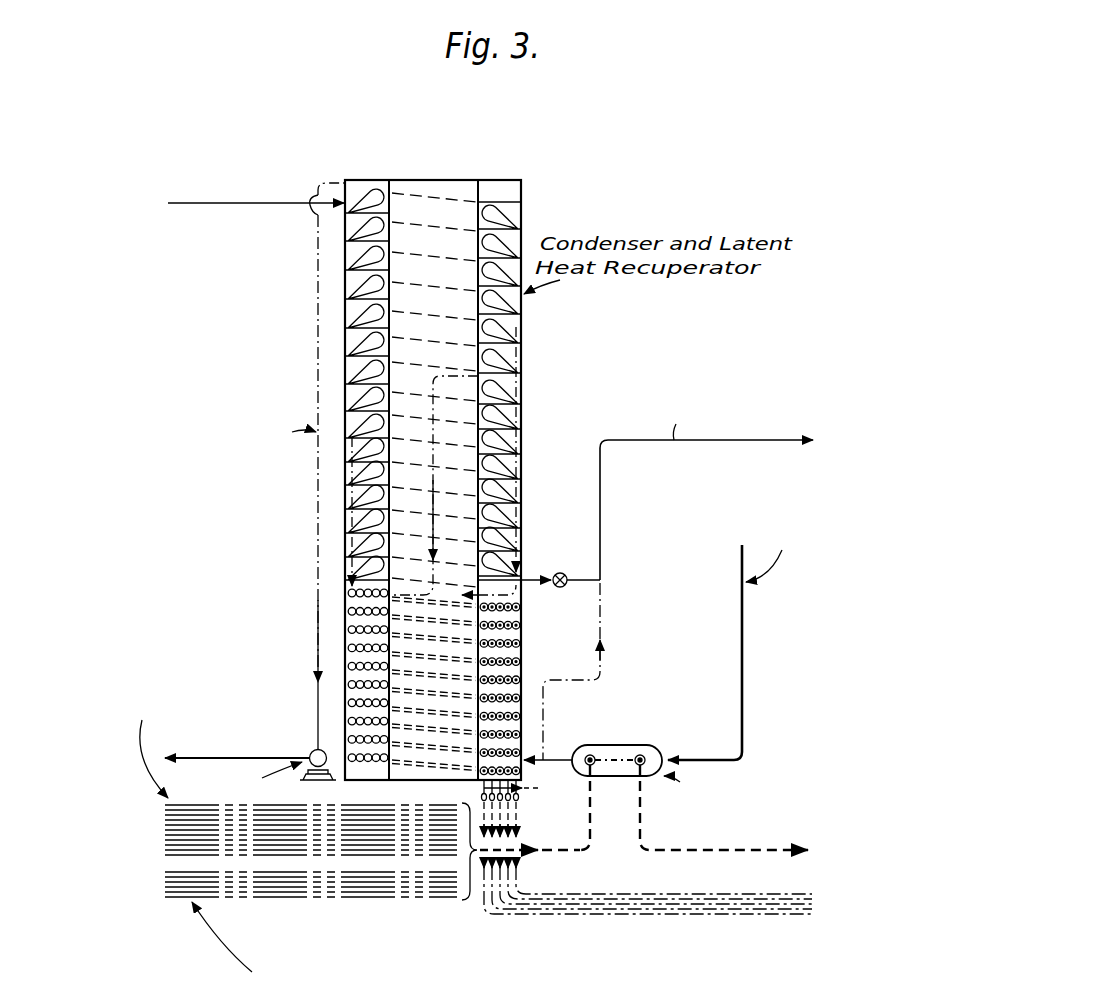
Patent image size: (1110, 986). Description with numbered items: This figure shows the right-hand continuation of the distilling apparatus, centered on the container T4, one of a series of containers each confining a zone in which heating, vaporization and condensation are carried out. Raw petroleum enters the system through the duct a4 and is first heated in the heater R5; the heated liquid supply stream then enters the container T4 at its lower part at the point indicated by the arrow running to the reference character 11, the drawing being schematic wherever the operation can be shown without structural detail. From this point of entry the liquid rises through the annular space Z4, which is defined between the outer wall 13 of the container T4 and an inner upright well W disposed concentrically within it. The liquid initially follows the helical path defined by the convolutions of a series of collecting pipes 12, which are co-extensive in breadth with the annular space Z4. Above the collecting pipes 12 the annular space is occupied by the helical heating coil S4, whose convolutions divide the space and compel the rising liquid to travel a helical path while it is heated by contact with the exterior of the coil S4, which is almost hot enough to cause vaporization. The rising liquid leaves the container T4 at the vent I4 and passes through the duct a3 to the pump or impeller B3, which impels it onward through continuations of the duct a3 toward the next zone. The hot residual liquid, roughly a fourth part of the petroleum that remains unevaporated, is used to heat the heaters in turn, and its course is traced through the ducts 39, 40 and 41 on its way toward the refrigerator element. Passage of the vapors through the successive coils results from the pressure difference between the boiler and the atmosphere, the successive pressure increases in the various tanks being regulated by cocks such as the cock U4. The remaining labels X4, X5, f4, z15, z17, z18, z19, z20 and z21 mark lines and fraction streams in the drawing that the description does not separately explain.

The container T4 is at (436, 180).
The inner upright well W is at (478, 190).
The heating coil S4 is at (368, 200).
The outer wall 13 is at (522, 418).
The annular space Z4 is at (378, 768).
The collecting pipes 12 is at (520, 642).
The first vapor fraction inlet X4 is at (262, 203).
The vent I4 is at (343, 180).
The duct a3 is at (316, 465).
The pump or impeller B3 is at (313, 781).
The cock U4 is at (558, 573).
The residue of first vapor fraction outlet X5 is at (782, 440).
The return pipe f4 is at (600, 608).
The duct a4 is at (744, 678).
The heater R5 is at (616, 745).
The duct 40 is at (632, 770).
The duct 41 is at (642, 824).
The duct 39 is at (540, 846).
The point of entry 11 is at (524, 752).
The condensed fractions second group pipes z to z15 is at (290, 894).
The condensed fraction pipe z17 is at (518, 918).
The condensed fraction pipe z18 is at (592, 912).
The condensed fraction pipe z19 is at (762, 908).
The condensed fraction pipe z20 is at (670, 898).
The condensed fraction pipe z21 is at (612, 893).